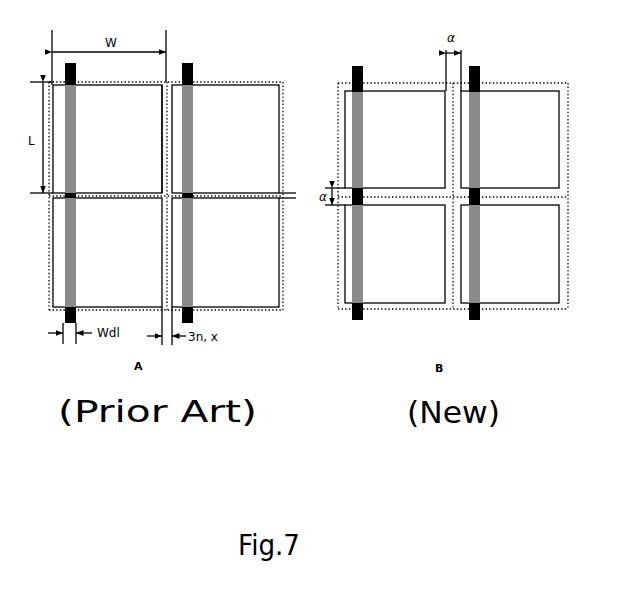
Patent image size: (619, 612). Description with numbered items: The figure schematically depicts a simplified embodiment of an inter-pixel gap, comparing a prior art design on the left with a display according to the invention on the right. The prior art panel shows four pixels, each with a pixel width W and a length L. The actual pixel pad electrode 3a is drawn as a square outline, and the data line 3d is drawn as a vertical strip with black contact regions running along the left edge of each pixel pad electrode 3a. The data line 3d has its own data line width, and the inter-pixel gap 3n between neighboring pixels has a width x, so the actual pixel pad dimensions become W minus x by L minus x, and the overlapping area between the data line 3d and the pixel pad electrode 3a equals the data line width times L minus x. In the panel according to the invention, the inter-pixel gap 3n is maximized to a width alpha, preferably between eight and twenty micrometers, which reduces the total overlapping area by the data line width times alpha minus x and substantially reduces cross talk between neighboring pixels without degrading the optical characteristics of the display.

The data line 3d is at (79, 74).
The pixel pad electrode 3a is at (161, 152).
The inter-pixel gap 3n is at (289, 175).